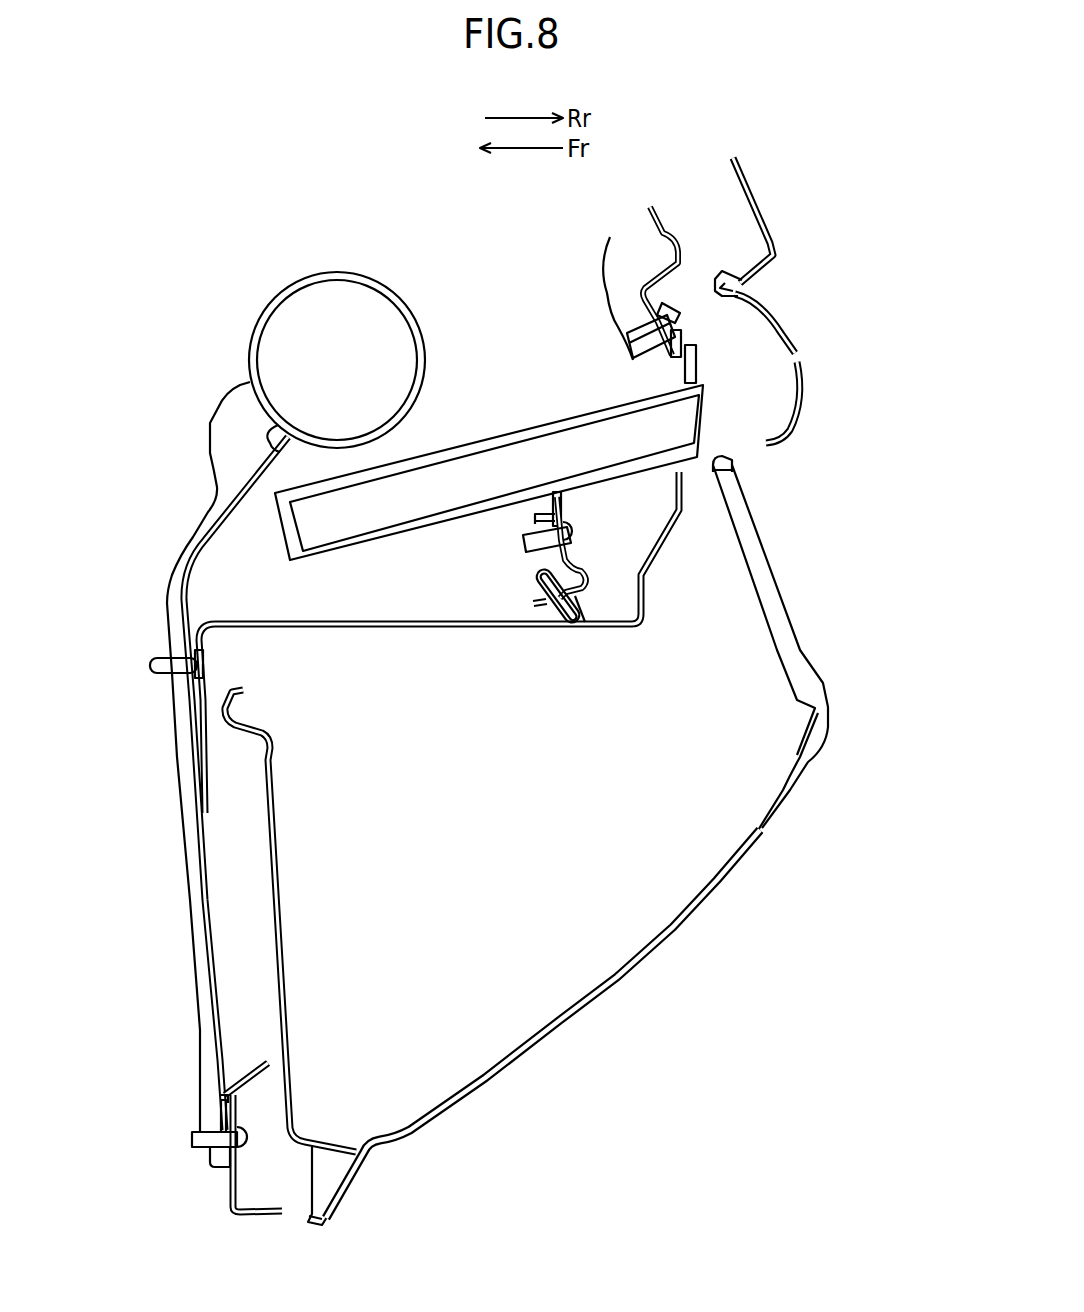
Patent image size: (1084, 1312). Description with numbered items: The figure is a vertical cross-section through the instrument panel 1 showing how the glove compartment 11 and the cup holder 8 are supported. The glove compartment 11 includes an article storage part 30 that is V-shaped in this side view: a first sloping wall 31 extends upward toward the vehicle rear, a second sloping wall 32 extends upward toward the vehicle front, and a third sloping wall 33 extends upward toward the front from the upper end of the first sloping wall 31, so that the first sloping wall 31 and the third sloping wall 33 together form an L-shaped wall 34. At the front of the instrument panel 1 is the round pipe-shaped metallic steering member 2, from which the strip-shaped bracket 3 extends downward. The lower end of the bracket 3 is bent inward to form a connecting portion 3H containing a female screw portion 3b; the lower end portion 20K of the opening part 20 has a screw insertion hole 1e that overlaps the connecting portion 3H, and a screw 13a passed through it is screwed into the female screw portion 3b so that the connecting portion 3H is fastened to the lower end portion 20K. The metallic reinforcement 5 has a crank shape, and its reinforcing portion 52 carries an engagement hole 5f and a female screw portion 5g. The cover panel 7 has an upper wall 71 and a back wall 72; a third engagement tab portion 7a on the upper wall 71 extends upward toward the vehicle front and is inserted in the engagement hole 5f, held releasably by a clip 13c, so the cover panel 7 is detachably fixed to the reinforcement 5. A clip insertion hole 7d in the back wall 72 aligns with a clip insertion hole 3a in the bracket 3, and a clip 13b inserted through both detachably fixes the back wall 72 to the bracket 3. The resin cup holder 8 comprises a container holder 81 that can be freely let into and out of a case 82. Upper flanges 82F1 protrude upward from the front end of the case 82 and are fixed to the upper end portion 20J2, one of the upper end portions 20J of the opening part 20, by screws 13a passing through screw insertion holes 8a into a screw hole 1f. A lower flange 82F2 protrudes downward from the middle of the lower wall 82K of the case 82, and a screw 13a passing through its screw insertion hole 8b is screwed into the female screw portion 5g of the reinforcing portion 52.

The instrument panel 1 is at (663, 228).
The screw insertion hole 1e is at (230, 1173).
The screw hole 1f is at (620, 338).
The steering member 2 is at (283, 292).
The bracket 3 is at (212, 545).
The clip insertion hole 3a is at (178, 668).
The female screw portion 3b is at (222, 1118).
The connecting portion 3H is at (225, 1102).
The reinforcement 5 is at (595, 572).
The engagement hole 5f is at (536, 597).
The female screw portion 5g is at (535, 530).
The cover panel 7 is at (397, 630).
The third engagement tab portion 7a is at (582, 610).
The clip insertion hole 7d is at (205, 668).
The upper wall 71 is at (470, 628).
The back wall 72 is at (210, 753).
The cup holder 8 is at (489, 477).
The screw insertion holes 8a is at (688, 340).
The screw insertion hole 8b is at (573, 518).
The container holder 81 is at (745, 402).
The case 82 is at (547, 427).
The upper flanges 82F1 is at (699, 368).
The lower flange 82F2 is at (565, 503).
The lower wall 82K is at (380, 542).
The glove compartment 11 is at (748, 884).
The screws 13a is at (682, 317).
The clip 13b is at (205, 660).
The clip 13c is at (540, 580).
The opening part 20 is at (557, 638).
The roof panel portion 20J is at (764, 255).
The other upper end portion 20J2 is at (748, 281).
The lower end portion 20K is at (240, 1110).
The article storage part 30 is at (519, 840).
The first sloping wall 31 is at (618, 978).
The second sloping wall 32 is at (272, 905).
The third sloping wall 33 is at (785, 548).
The wall 34 is at (519, 840).
The other reinforcing portion 52 is at (630, 580).